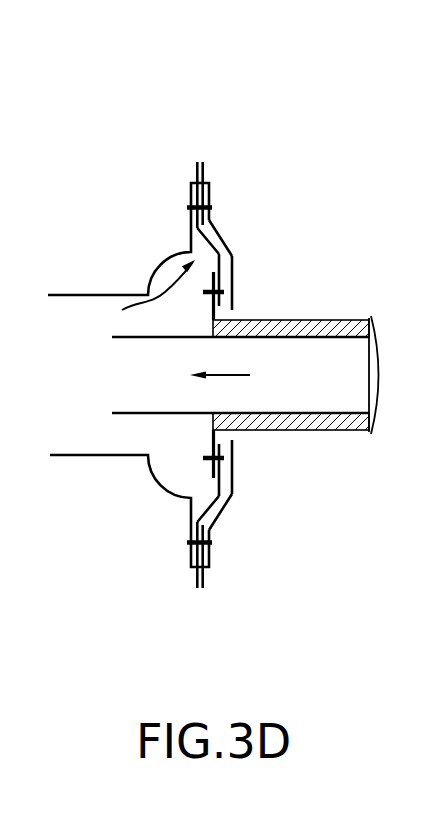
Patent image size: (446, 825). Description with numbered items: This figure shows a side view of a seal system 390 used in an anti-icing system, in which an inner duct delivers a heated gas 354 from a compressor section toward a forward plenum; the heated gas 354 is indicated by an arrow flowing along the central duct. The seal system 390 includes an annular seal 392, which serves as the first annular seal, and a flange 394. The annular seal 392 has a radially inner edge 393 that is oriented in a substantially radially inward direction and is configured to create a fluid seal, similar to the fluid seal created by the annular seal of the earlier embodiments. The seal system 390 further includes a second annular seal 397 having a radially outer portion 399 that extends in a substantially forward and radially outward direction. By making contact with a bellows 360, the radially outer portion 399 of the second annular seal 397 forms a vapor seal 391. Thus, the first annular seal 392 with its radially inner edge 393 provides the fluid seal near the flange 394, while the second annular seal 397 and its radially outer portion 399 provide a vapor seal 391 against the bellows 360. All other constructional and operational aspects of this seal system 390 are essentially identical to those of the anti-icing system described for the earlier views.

The seal system 390 is at (314, 122).
The bellows 360 is at (173, 254).
The vapor seal 391 is at (138, 294).
The radially outer portion 399 is at (200, 249).
The annular seal 392 is at (225, 242).
The second annular seal 397 is at (234, 265).
The radially inner edge 393 is at (237, 293).
The flange 394 is at (211, 313).
The heated gas 354 is at (250, 375).